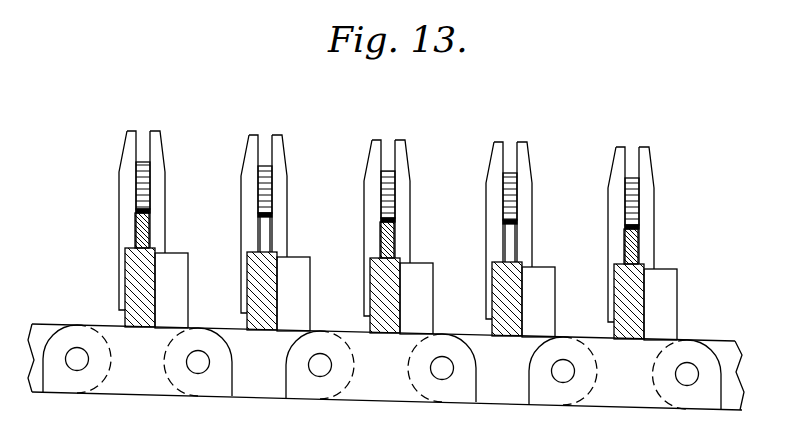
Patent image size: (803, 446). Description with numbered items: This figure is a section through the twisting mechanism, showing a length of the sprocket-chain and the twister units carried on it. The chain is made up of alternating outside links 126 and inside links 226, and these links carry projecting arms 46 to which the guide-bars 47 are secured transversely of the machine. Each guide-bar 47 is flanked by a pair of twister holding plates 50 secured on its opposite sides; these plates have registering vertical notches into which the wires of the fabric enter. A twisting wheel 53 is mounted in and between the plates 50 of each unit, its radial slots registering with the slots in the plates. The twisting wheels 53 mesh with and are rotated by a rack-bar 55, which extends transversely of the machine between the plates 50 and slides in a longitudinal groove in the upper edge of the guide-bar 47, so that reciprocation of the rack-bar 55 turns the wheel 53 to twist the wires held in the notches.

The projecting arm 46 is at (177, 308).
The guide-bar 47 is at (125, 273).
The twister holding plate 50 is at (120, 191).
The twisting wheel 53 is at (141, 167).
The rack-bar 55 is at (144, 229).
The outside link 126 is at (132, 385).
The inside link 226 is at (258, 385).